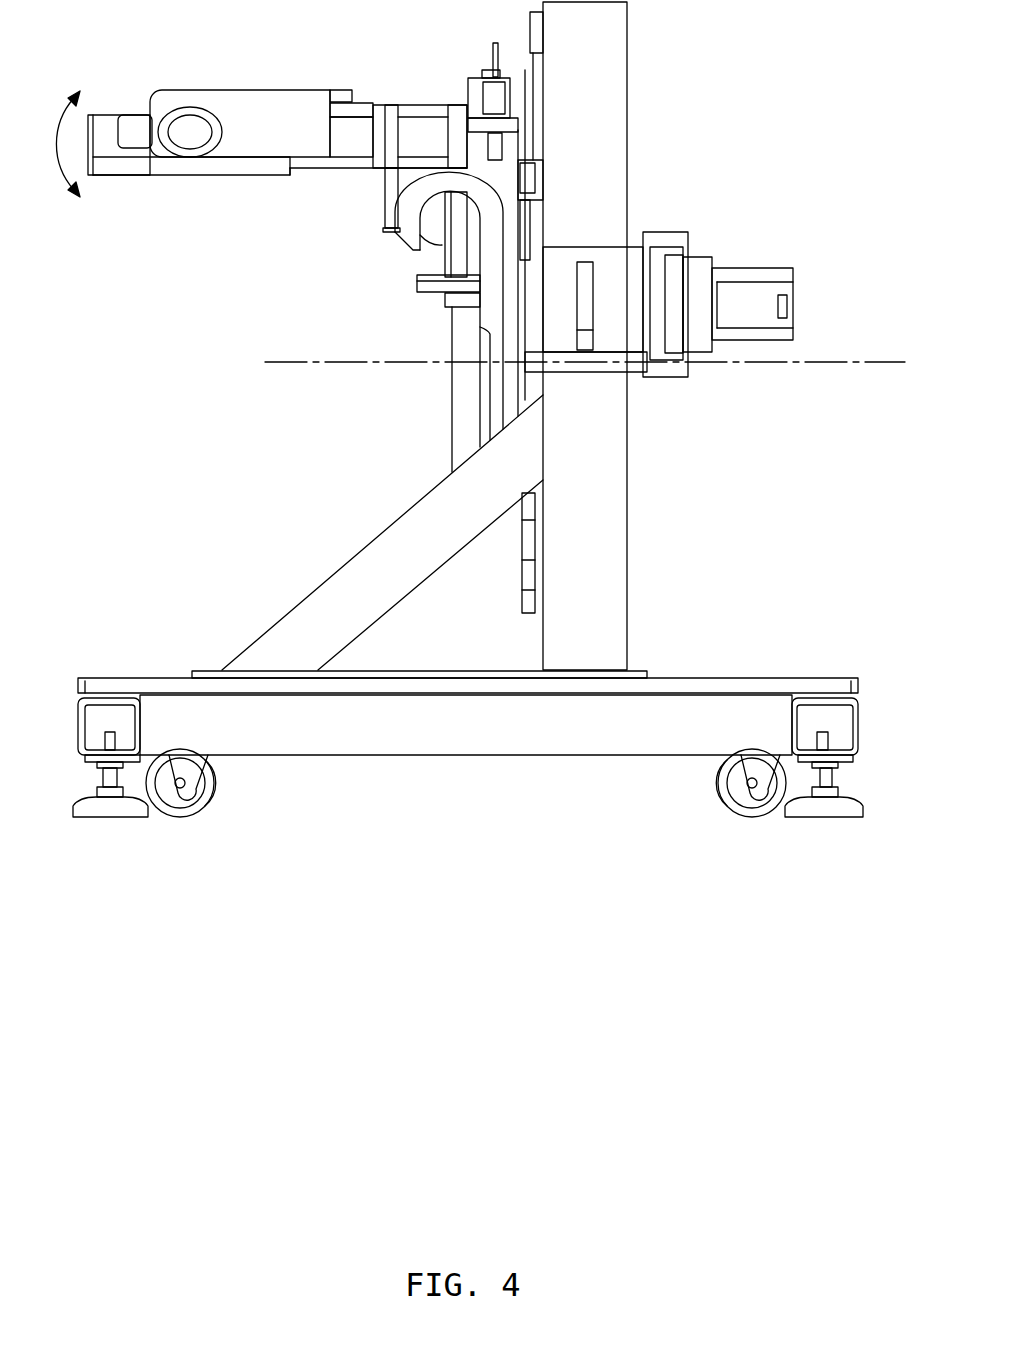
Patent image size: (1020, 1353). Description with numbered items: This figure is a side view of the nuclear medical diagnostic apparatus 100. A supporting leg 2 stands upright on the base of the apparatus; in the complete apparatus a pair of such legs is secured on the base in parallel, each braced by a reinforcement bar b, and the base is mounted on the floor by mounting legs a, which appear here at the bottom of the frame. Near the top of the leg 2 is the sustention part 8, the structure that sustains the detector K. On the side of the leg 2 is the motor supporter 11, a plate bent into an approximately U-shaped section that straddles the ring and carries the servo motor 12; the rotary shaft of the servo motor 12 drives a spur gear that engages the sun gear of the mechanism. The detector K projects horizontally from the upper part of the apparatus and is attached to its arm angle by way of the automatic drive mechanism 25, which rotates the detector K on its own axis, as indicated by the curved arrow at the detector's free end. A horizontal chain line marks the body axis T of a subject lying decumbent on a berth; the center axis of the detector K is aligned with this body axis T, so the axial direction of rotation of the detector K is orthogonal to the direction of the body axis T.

The nuclear medical diagnostic apparatus 100 is at (480, 526).
The supporting leg 2 is at (614, 151).
The sustention part 8 is at (403, 303).
The motor supporter 11 is at (613, 346).
The servo motor 12 is at (770, 276).
The automatic drive mechanism 25 is at (218, 100).
The detector K is at (261, 128).
The body axis T is at (877, 360).
The leveling foot a is at (116, 820).
The brace b is at (306, 604).